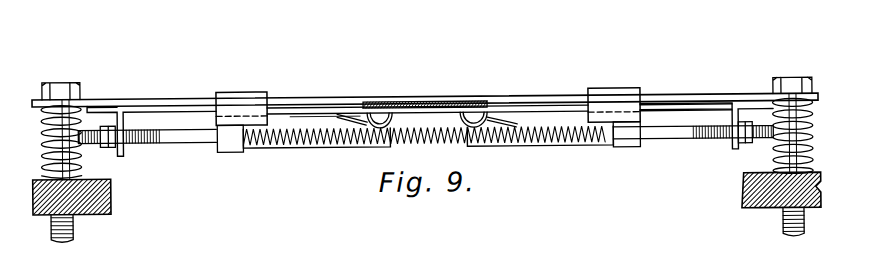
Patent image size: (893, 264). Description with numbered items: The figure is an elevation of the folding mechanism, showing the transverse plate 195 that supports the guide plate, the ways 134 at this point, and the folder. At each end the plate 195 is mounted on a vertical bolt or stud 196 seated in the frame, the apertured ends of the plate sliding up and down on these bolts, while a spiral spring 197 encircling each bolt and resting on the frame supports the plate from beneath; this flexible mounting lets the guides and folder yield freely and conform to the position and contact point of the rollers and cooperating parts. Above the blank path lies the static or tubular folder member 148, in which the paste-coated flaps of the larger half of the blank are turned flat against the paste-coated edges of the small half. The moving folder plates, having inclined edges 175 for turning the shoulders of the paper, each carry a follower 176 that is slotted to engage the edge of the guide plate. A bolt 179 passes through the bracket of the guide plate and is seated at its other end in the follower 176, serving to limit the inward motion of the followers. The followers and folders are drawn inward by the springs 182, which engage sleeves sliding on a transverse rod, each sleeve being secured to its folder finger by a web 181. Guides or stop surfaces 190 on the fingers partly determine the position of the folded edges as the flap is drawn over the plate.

The ways 134 is at (417, 108).
The tubular folder member 148 is at (350, 118).
The inclined edges 175 is at (340, 118).
The follower 176 is at (227, 102).
The bolt 179 is at (213, 144).
The web 181 is at (660, 124).
The springs 182 is at (300, 148).
The guides or stop surfaces 190 is at (290, 114).
The transverse plate 195 is at (680, 99).
The vertical bolts or studs 196 is at (62, 83).
The spiral springs 197 is at (80, 162).